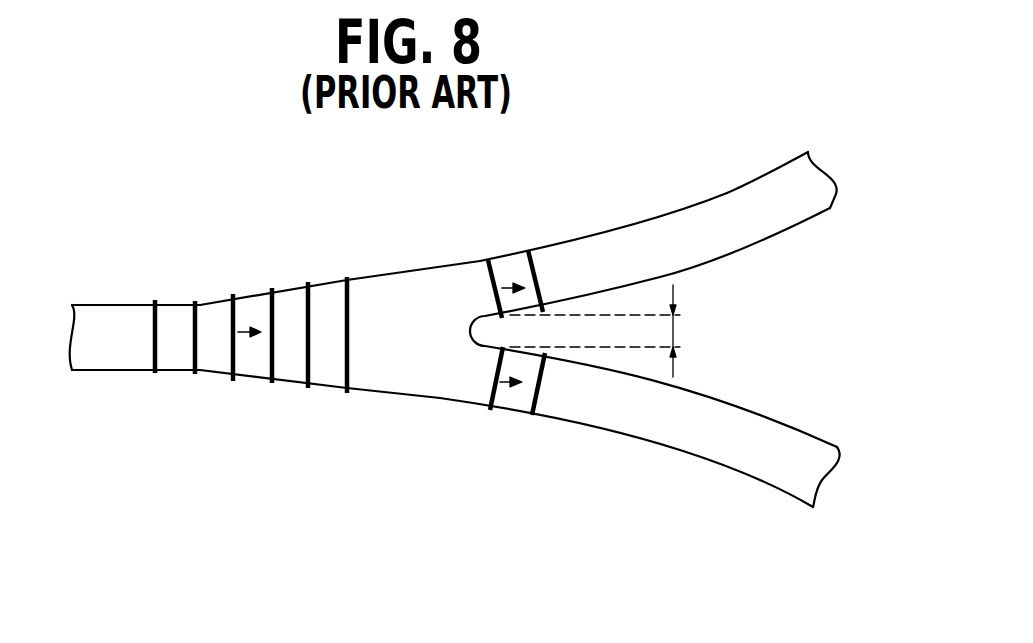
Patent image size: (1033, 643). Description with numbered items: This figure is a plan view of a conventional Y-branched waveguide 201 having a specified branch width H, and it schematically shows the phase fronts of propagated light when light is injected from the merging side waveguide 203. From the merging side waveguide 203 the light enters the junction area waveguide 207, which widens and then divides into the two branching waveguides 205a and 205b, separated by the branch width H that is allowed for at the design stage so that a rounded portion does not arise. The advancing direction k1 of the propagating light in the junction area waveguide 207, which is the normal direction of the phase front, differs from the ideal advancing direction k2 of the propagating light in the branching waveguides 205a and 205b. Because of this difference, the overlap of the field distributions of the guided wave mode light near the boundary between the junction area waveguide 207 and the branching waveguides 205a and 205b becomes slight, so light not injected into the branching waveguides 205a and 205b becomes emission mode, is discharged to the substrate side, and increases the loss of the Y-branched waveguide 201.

The Y-branched waveguide 201 is at (734, 87).
The merging side waveguide 203 is at (118, 347).
The branching waveguide 205a is at (728, 212).
The branching waveguide 205b is at (663, 427).
The junction area waveguide 207 is at (387, 367).
The advancing direction of propagating light in the junction area waveguide k1 is at (242, 334).
The advancing direction of propagating light in the branching waveguides k2 is at (503, 288).
The branch width H is at (676, 328).